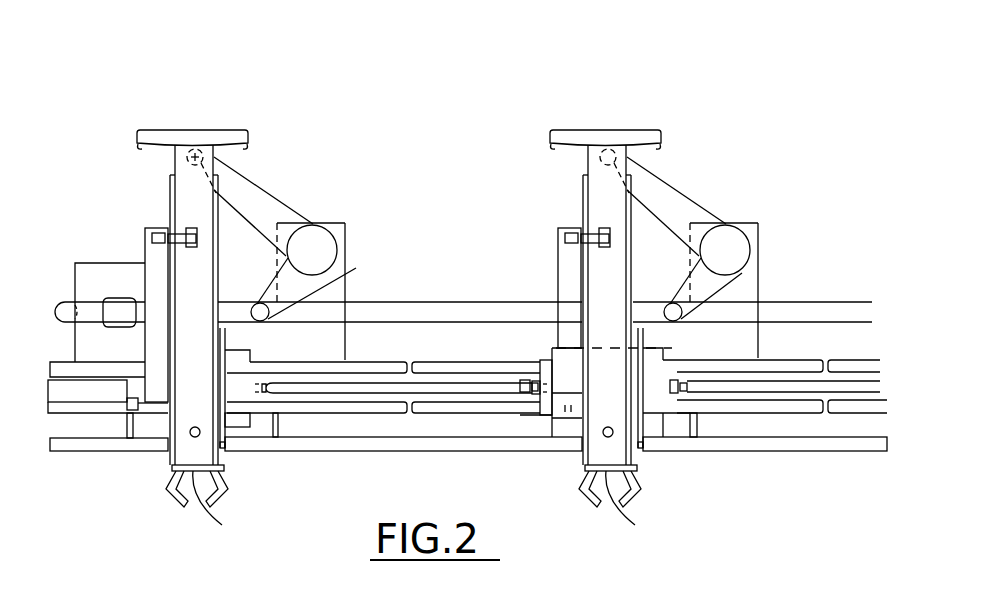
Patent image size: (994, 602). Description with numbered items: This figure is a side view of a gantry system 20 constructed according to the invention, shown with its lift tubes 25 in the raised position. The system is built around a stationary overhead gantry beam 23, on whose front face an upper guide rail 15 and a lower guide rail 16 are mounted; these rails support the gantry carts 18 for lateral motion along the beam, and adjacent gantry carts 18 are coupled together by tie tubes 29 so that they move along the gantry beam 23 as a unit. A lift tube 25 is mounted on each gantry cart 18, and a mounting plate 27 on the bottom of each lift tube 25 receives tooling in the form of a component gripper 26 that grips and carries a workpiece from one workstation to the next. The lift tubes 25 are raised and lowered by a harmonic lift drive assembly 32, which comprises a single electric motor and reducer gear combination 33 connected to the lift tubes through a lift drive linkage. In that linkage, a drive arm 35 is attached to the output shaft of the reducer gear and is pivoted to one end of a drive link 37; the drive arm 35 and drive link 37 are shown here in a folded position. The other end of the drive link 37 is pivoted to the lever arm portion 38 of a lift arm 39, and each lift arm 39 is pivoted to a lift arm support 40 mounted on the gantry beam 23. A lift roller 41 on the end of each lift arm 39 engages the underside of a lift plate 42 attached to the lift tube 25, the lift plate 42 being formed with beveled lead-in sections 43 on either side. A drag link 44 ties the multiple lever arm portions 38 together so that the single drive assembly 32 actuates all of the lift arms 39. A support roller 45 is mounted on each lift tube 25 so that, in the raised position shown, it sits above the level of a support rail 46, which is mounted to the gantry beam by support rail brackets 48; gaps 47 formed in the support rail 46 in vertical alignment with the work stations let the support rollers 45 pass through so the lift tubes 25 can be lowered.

The gantry system 20 is at (418, 104).
The lift plate 42 is at (190, 130).
The beveled lead-in sections 43 is at (142, 146).
The lift roller 41 is at (186, 157).
The lift tube 25 is at (187, 185).
The lift arm 39 is at (268, 197).
The lift arm support 40 is at (341, 222).
The harmonic lift drive assembly 32 is at (100, 248).
The electric motor and reducer gear combination 33 is at (84, 266).
The drive link 37 is at (85, 302).
The drive arm 35 is at (98, 323).
The lever arm portion 38 is at (496, 281).
The gantry beam 23 is at (371, 356).
The drag link 44 is at (496, 306).
The upper guide rail 15 is at (462, 343).
The lower guide rail 16 is at (432, 410).
The tie tube 29 is at (342, 393).
The support rail 46 is at (503, 443).
The support roller 45 is at (191, 437).
The gantry cart 18 is at (246, 418).
The support rail bracket 48 is at (124, 422).
The mounting plate 27 is at (178, 470).
The component gripper 26 is at (180, 506).
The gap 47 is at (434, 505).